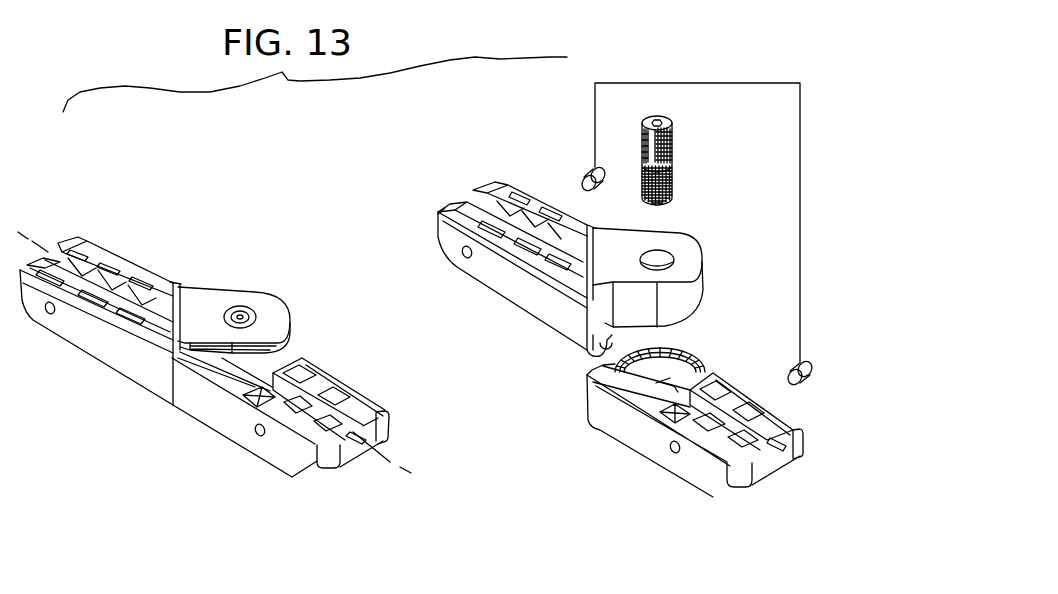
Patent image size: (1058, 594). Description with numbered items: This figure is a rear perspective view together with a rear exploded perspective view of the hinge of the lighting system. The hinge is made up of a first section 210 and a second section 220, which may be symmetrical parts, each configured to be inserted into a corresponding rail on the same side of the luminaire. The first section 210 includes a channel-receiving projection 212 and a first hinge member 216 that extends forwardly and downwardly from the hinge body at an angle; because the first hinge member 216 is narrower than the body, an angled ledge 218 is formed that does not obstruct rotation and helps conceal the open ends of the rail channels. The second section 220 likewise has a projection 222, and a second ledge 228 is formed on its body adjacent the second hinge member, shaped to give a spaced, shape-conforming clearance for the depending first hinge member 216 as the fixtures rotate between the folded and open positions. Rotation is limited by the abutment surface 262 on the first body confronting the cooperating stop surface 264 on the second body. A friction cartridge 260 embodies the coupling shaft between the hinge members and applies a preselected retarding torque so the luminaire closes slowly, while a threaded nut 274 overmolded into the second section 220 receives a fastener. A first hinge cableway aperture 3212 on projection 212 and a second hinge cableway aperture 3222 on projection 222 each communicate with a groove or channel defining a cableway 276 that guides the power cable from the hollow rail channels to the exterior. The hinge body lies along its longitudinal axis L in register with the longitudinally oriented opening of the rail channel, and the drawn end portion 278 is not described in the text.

The first section 210 is at (145, 264).
The second section 220 is at (319, 360).
The projection 212 is at (538, 193).
The first hinge member 216 is at (683, 262).
The first hinge cableway aperture 3212 is at (605, 238).
The angled ledge 218 is at (613, 351).
The abutment surface 262 is at (612, 336).
The first cableway 276 is at (482, 203).
The projection 222 is at (784, 410).
The second ledge 228 is at (673, 351).
The second hinge cableway aperture 3222 is at (663, 388).
The stop surface 264 is at (585, 400).
The second end 278 is at (772, 445).
The friction cartridge 260 is at (677, 177).
The threaded nut 274 is at (750, 84).
The longitudinal axis L is at (383, 465).